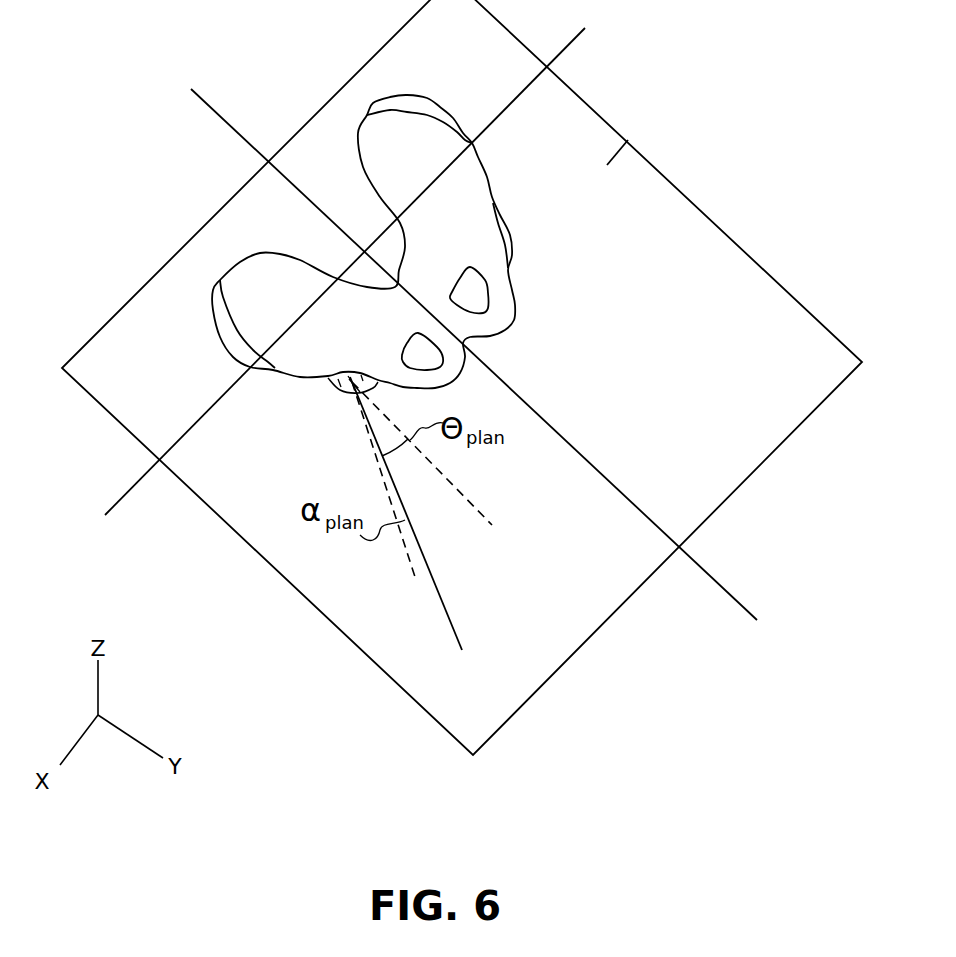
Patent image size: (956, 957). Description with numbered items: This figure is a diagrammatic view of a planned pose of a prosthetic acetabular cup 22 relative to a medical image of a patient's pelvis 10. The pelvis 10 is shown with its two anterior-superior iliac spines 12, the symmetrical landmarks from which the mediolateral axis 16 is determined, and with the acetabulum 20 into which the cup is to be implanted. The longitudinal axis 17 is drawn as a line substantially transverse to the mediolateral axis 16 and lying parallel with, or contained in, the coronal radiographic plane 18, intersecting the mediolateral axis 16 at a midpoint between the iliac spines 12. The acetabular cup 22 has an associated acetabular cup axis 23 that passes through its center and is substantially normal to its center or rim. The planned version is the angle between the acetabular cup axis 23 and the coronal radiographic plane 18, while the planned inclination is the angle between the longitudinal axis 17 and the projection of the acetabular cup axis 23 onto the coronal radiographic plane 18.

The pelvis 10 is at (455, 100).
The anterior-superior iliac spines 12 is at (465, 135).
The mediolateral axis 16 is at (115, 502).
The longitudinal axis 17 is at (223, 117).
The coronal radiographic plane 18 is at (627, 140).
The acetabulum 20 is at (503, 225).
The acetabular cup 22 is at (347, 371).
The acetabular cup axis 23 is at (453, 627).